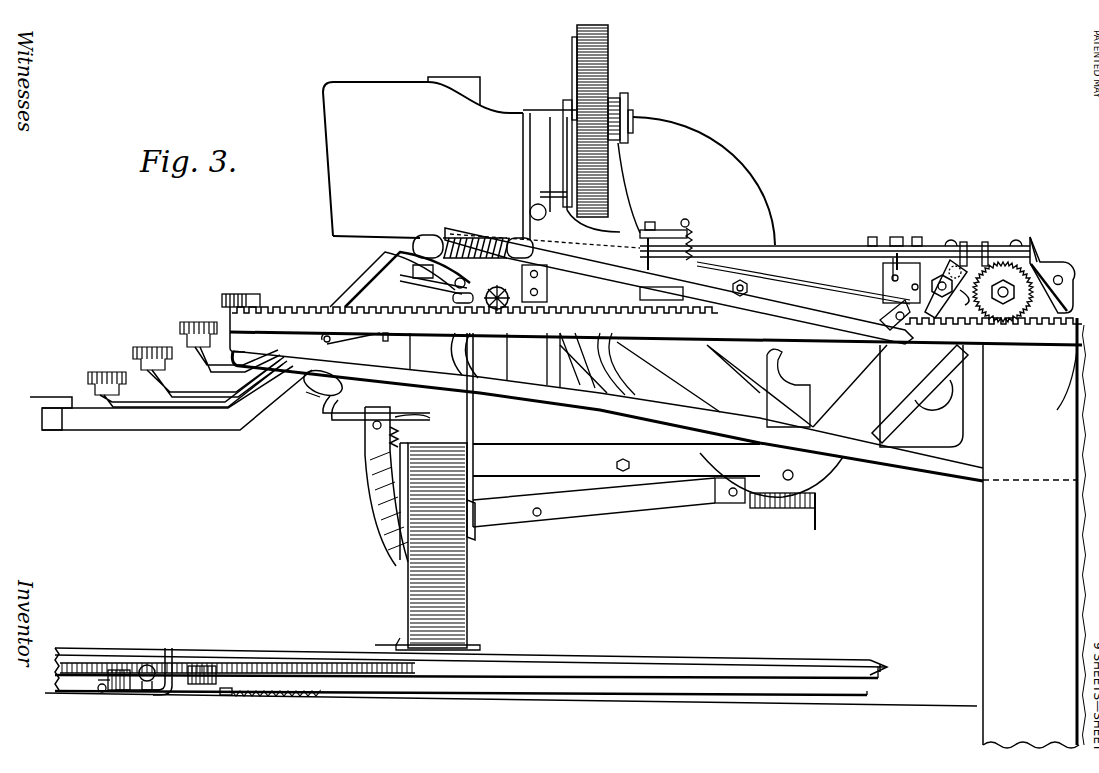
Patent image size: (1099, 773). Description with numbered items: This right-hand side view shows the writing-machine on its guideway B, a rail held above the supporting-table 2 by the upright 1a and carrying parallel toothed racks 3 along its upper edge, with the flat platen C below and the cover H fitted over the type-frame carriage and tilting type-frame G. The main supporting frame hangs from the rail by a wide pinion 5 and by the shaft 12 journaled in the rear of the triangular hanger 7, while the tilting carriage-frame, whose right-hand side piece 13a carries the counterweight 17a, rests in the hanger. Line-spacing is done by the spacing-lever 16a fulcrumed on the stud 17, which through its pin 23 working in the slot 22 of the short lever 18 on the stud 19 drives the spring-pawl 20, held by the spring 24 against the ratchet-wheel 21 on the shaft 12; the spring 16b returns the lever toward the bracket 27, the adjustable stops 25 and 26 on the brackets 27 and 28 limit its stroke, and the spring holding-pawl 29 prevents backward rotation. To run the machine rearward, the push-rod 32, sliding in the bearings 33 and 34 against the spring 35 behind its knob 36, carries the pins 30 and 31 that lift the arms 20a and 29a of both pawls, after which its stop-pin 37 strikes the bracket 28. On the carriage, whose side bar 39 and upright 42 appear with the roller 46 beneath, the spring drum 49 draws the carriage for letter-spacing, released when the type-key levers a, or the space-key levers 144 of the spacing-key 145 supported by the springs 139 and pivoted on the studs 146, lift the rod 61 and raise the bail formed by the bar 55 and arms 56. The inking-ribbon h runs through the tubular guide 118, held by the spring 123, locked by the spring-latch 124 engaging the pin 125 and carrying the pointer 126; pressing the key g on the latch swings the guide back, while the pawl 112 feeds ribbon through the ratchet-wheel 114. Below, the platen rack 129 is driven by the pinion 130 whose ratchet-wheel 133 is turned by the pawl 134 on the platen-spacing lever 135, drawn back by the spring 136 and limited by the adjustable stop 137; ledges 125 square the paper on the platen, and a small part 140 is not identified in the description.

The spring-actuated drum 49 is at (610, 55).
The knob 36 is at (418, 236).
The spring 35 is at (465, 238).
The bearing 33 is at (518, 240).
The wide pinion 5 is at (493, 286).
The bracket 27 is at (650, 222).
The adjustable stop 25 is at (660, 240).
The spring 16b is at (694, 240).
The push-rod 32 is at (782, 246).
The stop-pin 37 is at (868, 240).
The adjustable stop 26 is at (895, 238).
The bracket 28 is at (914, 238).
The stud 19 is at (938, 274).
The pin 30 is at (950, 244).
The upwardly-extending arm 20a is at (965, 242).
The bearing 34 is at (985, 242).
The pin 31 is at (1018, 244).
The upwardly-extending arm 29a is at (1032, 238).
The spring holding-pawl 29 is at (1060, 258).
The pinion-shaft 12 is at (1027, 300).
The spring-pawl 20 is at (980, 300).
The ratchet-wheel 21 is at (1010, 300).
The toothed rack 3 is at (275, 306).
The pivot studs 146 is at (390, 260).
The springs 139 is at (375, 275).
The spacing-lever 16a is at (679, 286).
The stud 17 is at (732, 287).
The short lever 18 is at (900, 300).
The slot 22 is at (925, 352).
The spring 24 is at (948, 332).
The pin 23 is at (880, 348).
The side piece 13a is at (686, 384).
The hanger 7 is at (915, 396).
The counterweight 17a is at (930, 407).
The upright 1a is at (1034, 533).
The roller 46 is at (793, 478).
The vertically-movable bar 55 is at (733, 497).
The arms 56 is at (648, 495).
The side bar 39 is at (616, 428).
The pawl 112 is at (475, 462).
The upwardly-extending rod 61 is at (590, 395).
The tubular ribbon-guide 118 is at (470, 620).
The ratchet-wheel 114 is at (475, 533).
The pointer 126 is at (380, 642).
The spring 123 is at (372, 452).
The spring-latch 124 is at (335, 418).
The pin 125 is at (432, 420).
The space-key levers 144 is at (145, 430).
The spacing-key 145 is at (50, 400).
The pinion 130 is at (195, 665).
The pawl 134 is at (205, 690).
The platen-spacing lever 135 is at (141, 690).
The roller 140 is at (117, 692).
The adjustable stop 137 is at (98, 690).
The ratchet-wheel 133 is at (228, 692).
The spring 136 is at (282, 697).
The rack 129 is at (403, 680).
The supporting-table 2 is at (900, 705).
The uprights 42 is at (573, 364).
The cover H is at (549, 161).
The type-frame G is at (441, 360).
The guideway B is at (993, 438).
The platen C is at (665, 660).
The type-key levers a is at (205, 352).
The key g is at (312, 392).
The inking-ribbon h is at (408, 565).